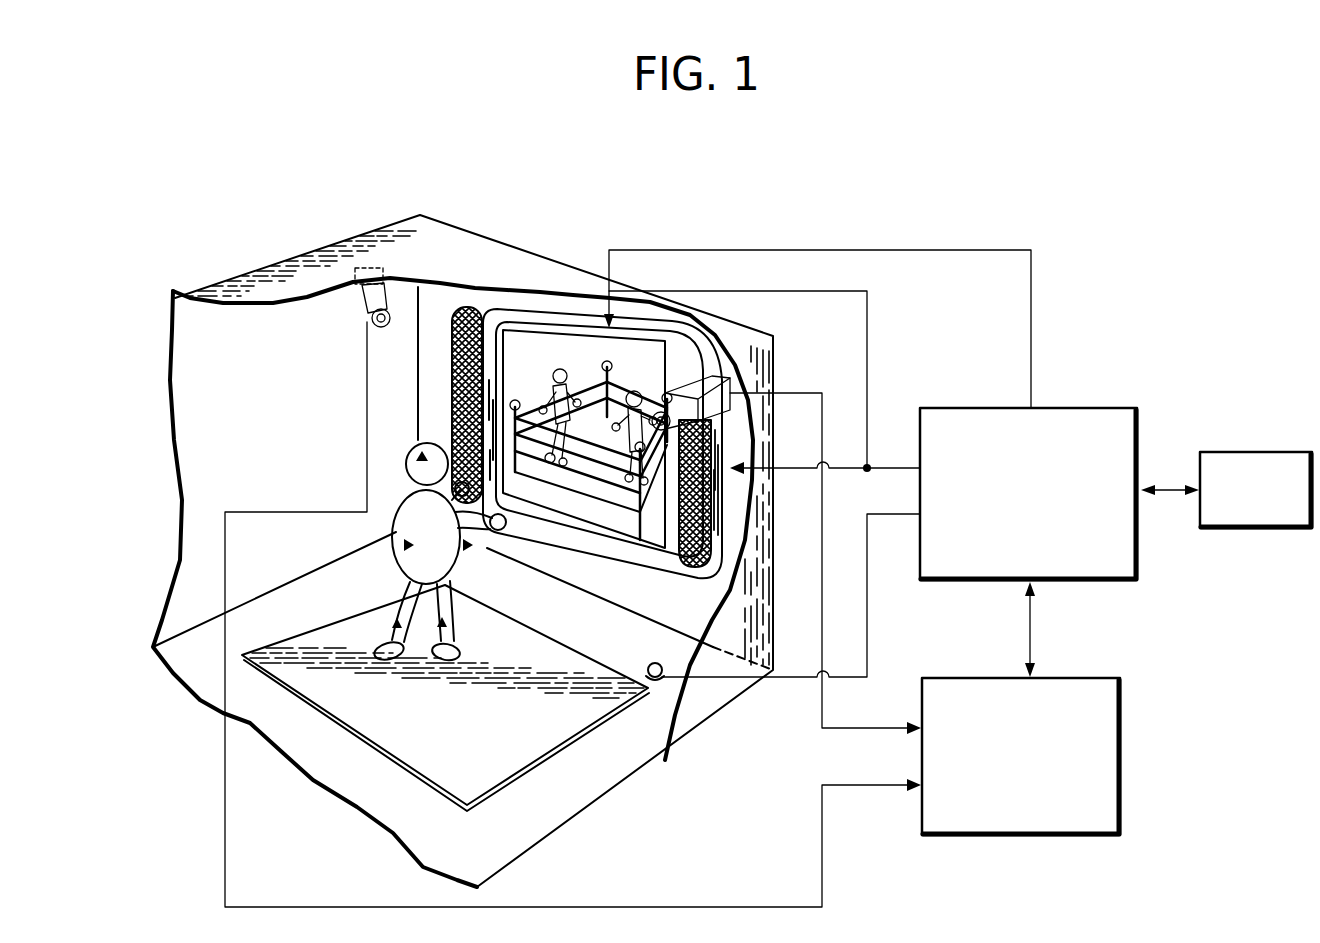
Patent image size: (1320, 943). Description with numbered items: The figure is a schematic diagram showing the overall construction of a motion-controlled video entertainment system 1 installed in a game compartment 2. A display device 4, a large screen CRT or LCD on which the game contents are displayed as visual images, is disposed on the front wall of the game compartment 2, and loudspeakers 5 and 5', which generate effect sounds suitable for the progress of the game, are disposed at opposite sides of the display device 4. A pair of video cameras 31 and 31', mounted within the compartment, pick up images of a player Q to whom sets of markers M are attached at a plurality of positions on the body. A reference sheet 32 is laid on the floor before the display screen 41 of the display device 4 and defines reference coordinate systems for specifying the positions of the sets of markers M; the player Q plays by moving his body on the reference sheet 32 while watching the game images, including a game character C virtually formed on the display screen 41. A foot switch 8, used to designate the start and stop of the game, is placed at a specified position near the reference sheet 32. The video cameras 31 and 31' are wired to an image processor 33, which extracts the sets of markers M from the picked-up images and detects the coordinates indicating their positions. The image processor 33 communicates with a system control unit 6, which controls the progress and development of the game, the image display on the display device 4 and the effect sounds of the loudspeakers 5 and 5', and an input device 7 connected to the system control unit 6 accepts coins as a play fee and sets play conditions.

The motion-controlled video entertainment system 1 is at (949, 178).
The game compartment 2 is at (353, 232).
The display device 4 is at (557, 318).
The loudspeaker 5 is at (460, 370).
The loudspeaker 5' is at (693, 525).
The video camera 31 is at (349, 321).
The video camera 31' is at (739, 385).
The player Q is at (414, 445).
The markers M is at (395, 545).
The game character C is at (556, 370).
The display screen 41 is at (588, 515).
The foot switch 8 is at (651, 663).
The reference sheet 32 is at (548, 738).
The system control unit 6 is at (1108, 408).
The input device 7 is at (1253, 460).
The image processor 33 is at (1077, 678).